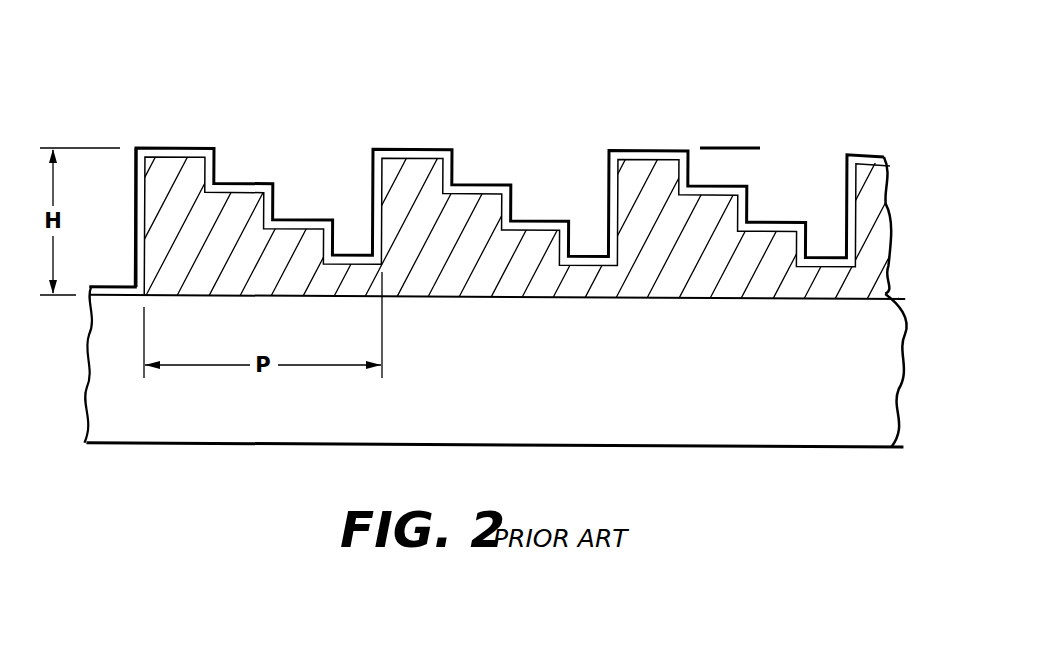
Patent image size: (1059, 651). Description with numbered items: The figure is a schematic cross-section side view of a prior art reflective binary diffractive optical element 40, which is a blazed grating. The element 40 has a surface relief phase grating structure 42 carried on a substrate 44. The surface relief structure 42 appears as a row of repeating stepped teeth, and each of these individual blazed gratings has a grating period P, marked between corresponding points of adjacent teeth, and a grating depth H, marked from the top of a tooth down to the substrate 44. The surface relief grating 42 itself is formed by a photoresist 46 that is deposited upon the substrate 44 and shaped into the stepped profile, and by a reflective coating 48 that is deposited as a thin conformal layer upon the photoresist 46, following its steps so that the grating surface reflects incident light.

The reflective binary diffractive optical element 40 is at (670, 78).
The surface relief phase grating structure 42 is at (122, 175).
The substrate 44 is at (148, 428).
The photoresist 46 is at (486, 205).
The reflective coating 48 is at (425, 148).